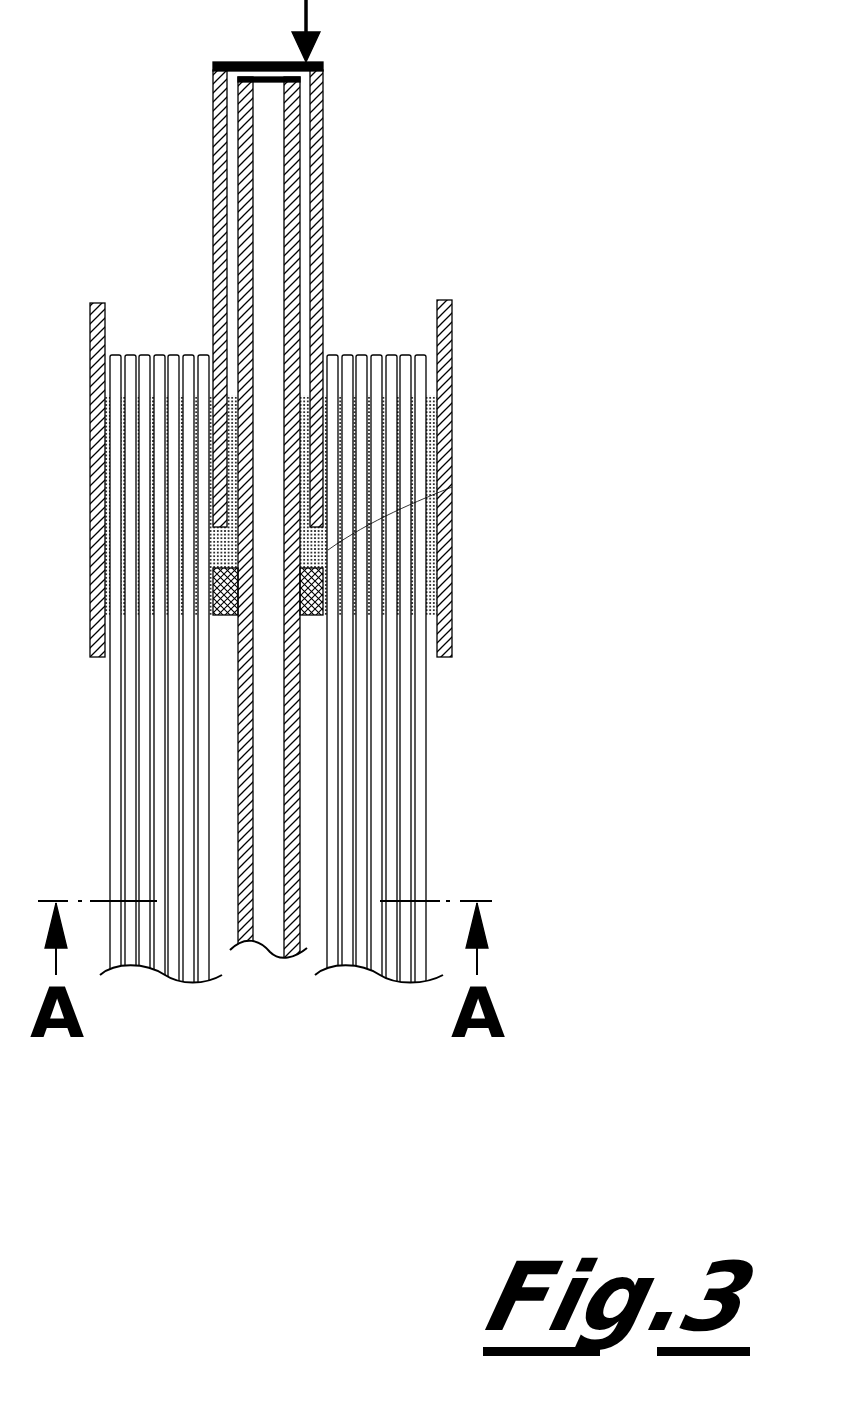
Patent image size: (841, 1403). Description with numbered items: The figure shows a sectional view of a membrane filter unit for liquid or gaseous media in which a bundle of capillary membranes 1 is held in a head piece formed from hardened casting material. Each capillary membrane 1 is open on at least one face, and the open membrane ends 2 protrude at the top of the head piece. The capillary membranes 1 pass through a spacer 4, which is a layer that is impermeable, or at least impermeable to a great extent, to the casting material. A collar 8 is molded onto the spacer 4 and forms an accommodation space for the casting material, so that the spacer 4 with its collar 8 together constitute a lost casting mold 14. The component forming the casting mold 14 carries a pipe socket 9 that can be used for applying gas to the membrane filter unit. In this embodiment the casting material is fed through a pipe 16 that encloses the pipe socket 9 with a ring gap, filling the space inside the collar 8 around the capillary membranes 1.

The capillary membranes 1 is at (423, 823).
The open membrane end 2 is at (378, 347).
The spacer 4 is at (315, 613).
The collar 8 is at (455, 382).
The pipe socket 9 is at (285, 135).
The casting mold 14 is at (487, 542).
The pipe 16 is at (323, 197).